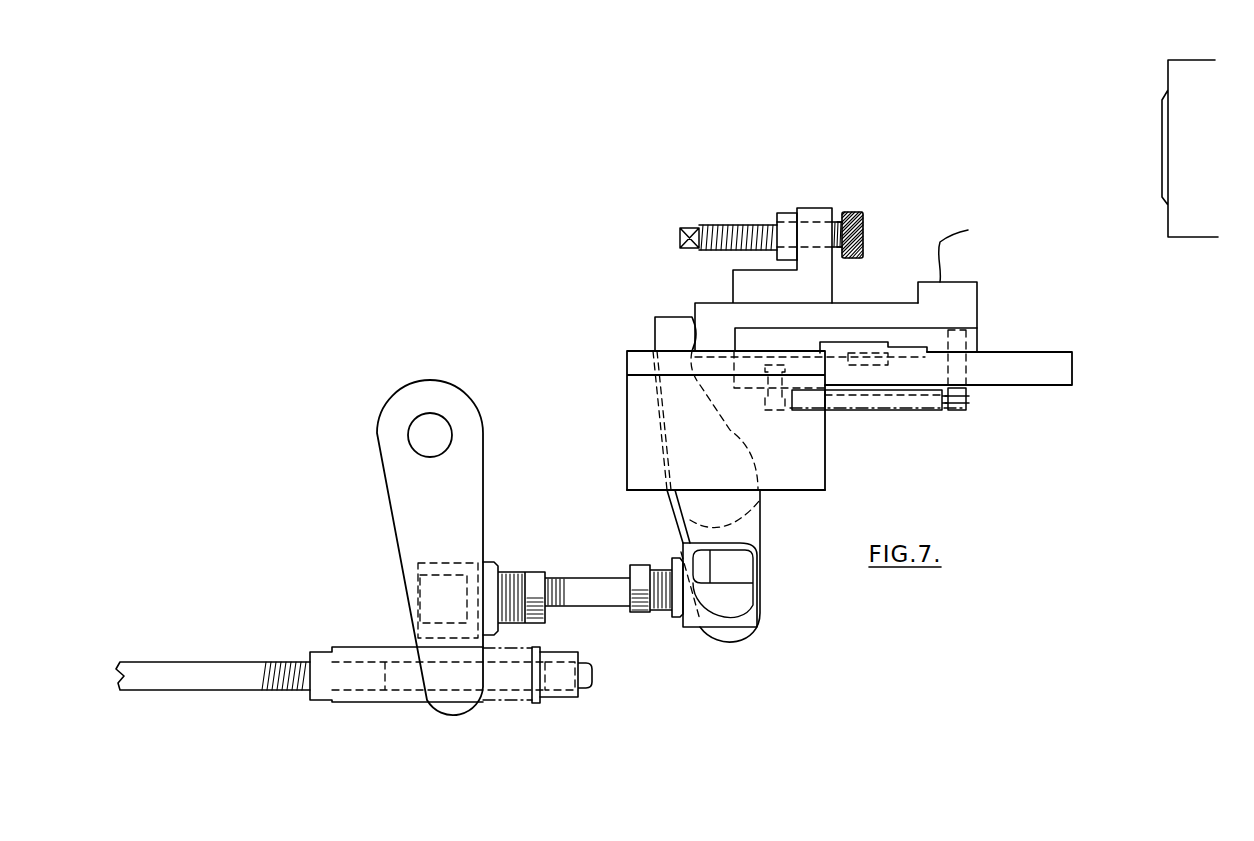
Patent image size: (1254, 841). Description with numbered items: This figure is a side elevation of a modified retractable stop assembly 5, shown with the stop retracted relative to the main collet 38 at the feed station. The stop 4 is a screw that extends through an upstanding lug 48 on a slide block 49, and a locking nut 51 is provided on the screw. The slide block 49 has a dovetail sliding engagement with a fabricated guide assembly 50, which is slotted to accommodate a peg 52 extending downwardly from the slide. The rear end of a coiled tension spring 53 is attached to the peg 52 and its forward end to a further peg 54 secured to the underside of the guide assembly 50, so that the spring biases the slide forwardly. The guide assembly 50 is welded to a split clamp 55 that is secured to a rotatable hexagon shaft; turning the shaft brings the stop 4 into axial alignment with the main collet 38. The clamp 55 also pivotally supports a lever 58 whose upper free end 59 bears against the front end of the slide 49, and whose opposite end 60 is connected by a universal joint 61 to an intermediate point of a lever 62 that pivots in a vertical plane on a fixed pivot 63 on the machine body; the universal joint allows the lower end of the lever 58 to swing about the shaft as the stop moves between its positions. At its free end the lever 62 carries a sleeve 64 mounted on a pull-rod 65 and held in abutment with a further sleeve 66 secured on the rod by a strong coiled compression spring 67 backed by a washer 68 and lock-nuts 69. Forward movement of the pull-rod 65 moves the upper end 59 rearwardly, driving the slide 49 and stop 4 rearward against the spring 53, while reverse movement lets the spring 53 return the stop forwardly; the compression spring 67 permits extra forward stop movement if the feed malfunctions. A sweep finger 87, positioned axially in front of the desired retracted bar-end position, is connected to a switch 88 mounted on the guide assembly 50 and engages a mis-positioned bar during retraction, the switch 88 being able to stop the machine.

The stop 4 is at (850, 212).
The stop assembly 5 is at (846, 438).
The main collet 38 is at (1168, 128).
The upstanding lug 48 is at (812, 208).
The slide block 49 is at (883, 307).
The guide assembly 50 is at (1013, 378).
The locking nut 51 is at (787, 216).
The peg 52 is at (953, 412).
The coiled tension spring 53 is at (845, 411).
The further peg 54 is at (777, 410).
The split clamp 55 is at (648, 478).
The lever 58 is at (660, 414).
The upper free end 59 is at (678, 326).
The opposite end 60 is at (733, 640).
The universal joint 61 is at (601, 620).
The lever 62 is at (411, 533).
The fixed pivot 63 is at (439, 437).
The sleeve 64 is at (435, 693).
The pull-rod 65 is at (208, 676).
The further sleeve 66 is at (361, 695).
The coiled compression spring 67 is at (505, 697).
The washer 68 is at (536, 705).
The lock-nuts 69 is at (571, 709).
The sweep finger 87 is at (937, 252).
The switch 88 is at (965, 302).